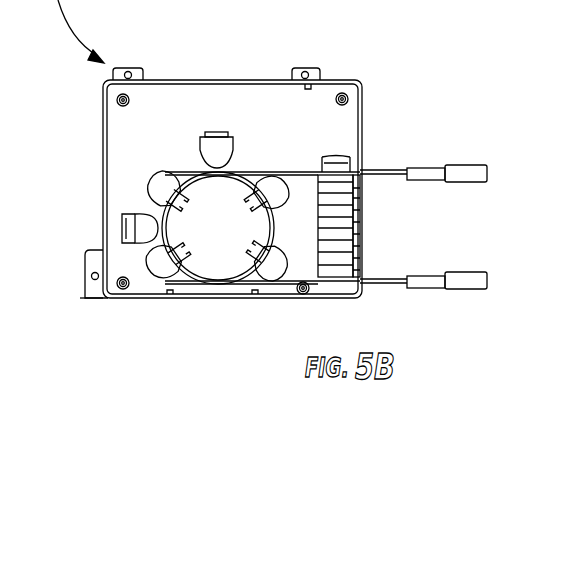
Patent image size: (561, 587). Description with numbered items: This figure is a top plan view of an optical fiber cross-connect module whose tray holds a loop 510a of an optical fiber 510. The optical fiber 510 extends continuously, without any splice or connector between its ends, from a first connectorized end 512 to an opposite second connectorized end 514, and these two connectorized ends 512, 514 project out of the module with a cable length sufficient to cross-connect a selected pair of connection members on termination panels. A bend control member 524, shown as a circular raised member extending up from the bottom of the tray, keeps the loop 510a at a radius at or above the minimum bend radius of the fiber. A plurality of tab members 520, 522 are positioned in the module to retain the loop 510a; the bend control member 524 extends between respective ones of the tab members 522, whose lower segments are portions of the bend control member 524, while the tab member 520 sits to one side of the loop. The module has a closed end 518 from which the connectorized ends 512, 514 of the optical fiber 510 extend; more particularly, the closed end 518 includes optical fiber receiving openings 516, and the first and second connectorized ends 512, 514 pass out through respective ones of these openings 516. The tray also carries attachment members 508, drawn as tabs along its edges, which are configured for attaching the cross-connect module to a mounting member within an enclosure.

The attachment members 508 is at (112, 70).
The optical fiber 510 is at (366, 170).
The loop of the optical fiber 510a is at (150, 195).
The first connectorized end 512 is at (465, 170).
The second connectorized end 514 is at (463, 288).
The optical fiber receiving openings 516 is at (362, 178).
The closed end 518 is at (340, 225).
The tab members 520 is at (122, 213).
The tab members 522 is at (248, 195).
The bend control member 524 is at (240, 180).